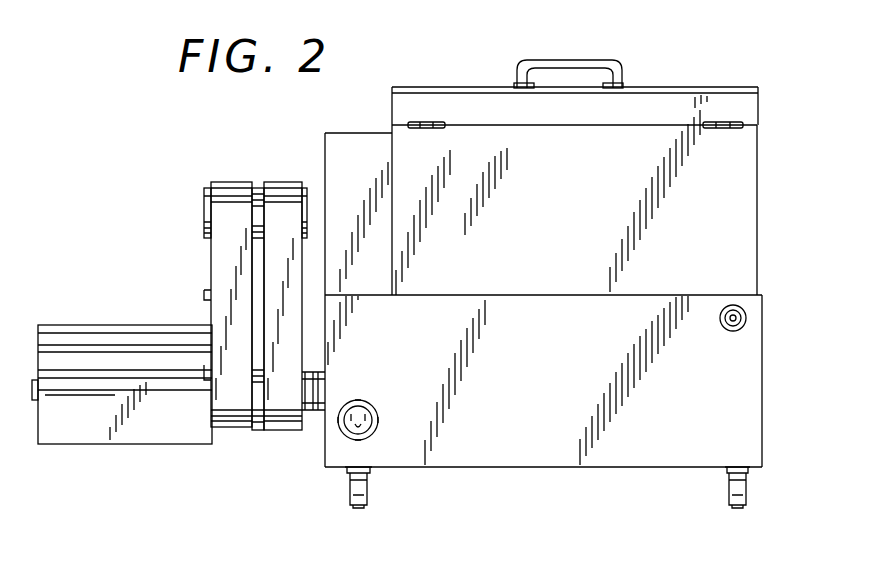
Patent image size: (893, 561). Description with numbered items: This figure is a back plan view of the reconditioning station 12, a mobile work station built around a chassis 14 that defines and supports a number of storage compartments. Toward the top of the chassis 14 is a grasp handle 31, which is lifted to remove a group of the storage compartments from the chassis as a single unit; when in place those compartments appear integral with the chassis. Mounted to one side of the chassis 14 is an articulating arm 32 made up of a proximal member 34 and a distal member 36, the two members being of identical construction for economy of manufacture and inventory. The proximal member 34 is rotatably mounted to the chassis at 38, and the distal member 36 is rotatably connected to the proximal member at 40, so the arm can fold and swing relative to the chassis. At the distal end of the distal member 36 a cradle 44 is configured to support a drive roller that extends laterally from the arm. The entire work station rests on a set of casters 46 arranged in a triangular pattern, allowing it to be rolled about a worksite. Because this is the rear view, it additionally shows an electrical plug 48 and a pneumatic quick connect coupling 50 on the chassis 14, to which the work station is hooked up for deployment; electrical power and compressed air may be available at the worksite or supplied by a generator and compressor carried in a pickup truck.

The reconditioning station 12 is at (92, 204).
The chassis 14 is at (744, 414).
The grasp handle 31 is at (606, 72).
The articulating arm 32 is at (207, 263).
The proximal member 34 is at (284, 182).
The distal member 36 is at (226, 182).
The rotatable mounting of proximal arm to chassis 38 is at (310, 412).
The rotatable connection of distal arm to proximal arm 40 is at (258, 186).
The cradle 44 is at (58, 430).
The casters 46 is at (356, 502).
The electrical plug 48 is at (368, 406).
The pneumatic quick connect coupling 50 is at (747, 318).